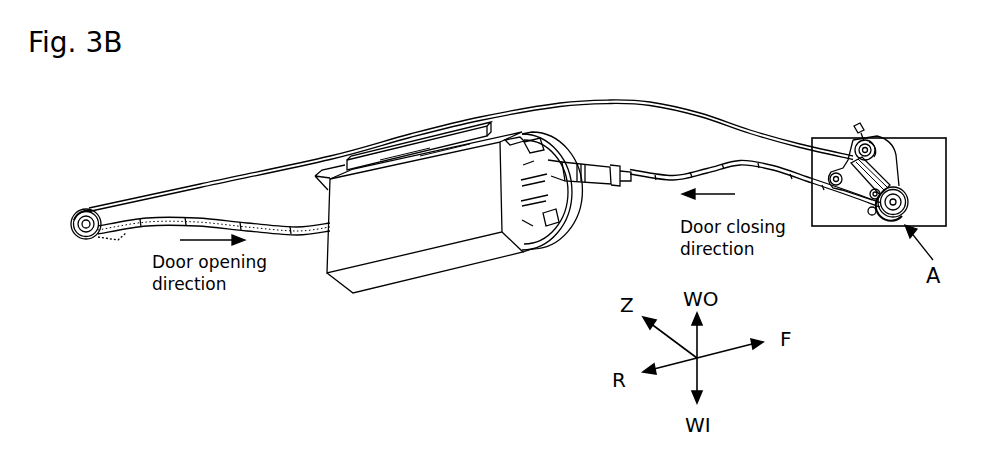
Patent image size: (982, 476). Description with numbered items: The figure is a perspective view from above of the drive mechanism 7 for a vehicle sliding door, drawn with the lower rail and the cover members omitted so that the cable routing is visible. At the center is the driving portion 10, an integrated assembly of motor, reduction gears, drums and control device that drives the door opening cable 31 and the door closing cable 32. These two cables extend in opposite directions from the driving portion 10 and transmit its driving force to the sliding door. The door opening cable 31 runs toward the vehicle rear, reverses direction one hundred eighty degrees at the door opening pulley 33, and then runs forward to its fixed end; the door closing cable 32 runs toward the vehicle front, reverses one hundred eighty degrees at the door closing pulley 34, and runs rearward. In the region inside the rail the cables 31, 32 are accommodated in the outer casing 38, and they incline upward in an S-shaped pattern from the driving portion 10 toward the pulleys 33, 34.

The drive mechanism 7 is at (508, 209).
The driving portion 10 is at (398, 280).
The door opening cable 31 is at (268, 167).
The door closing cable 32 is at (845, 150).
The door opening pulley 33 is at (83, 208).
The door closing pulley 34 is at (902, 188).
The outer casing 38 is at (290, 236).